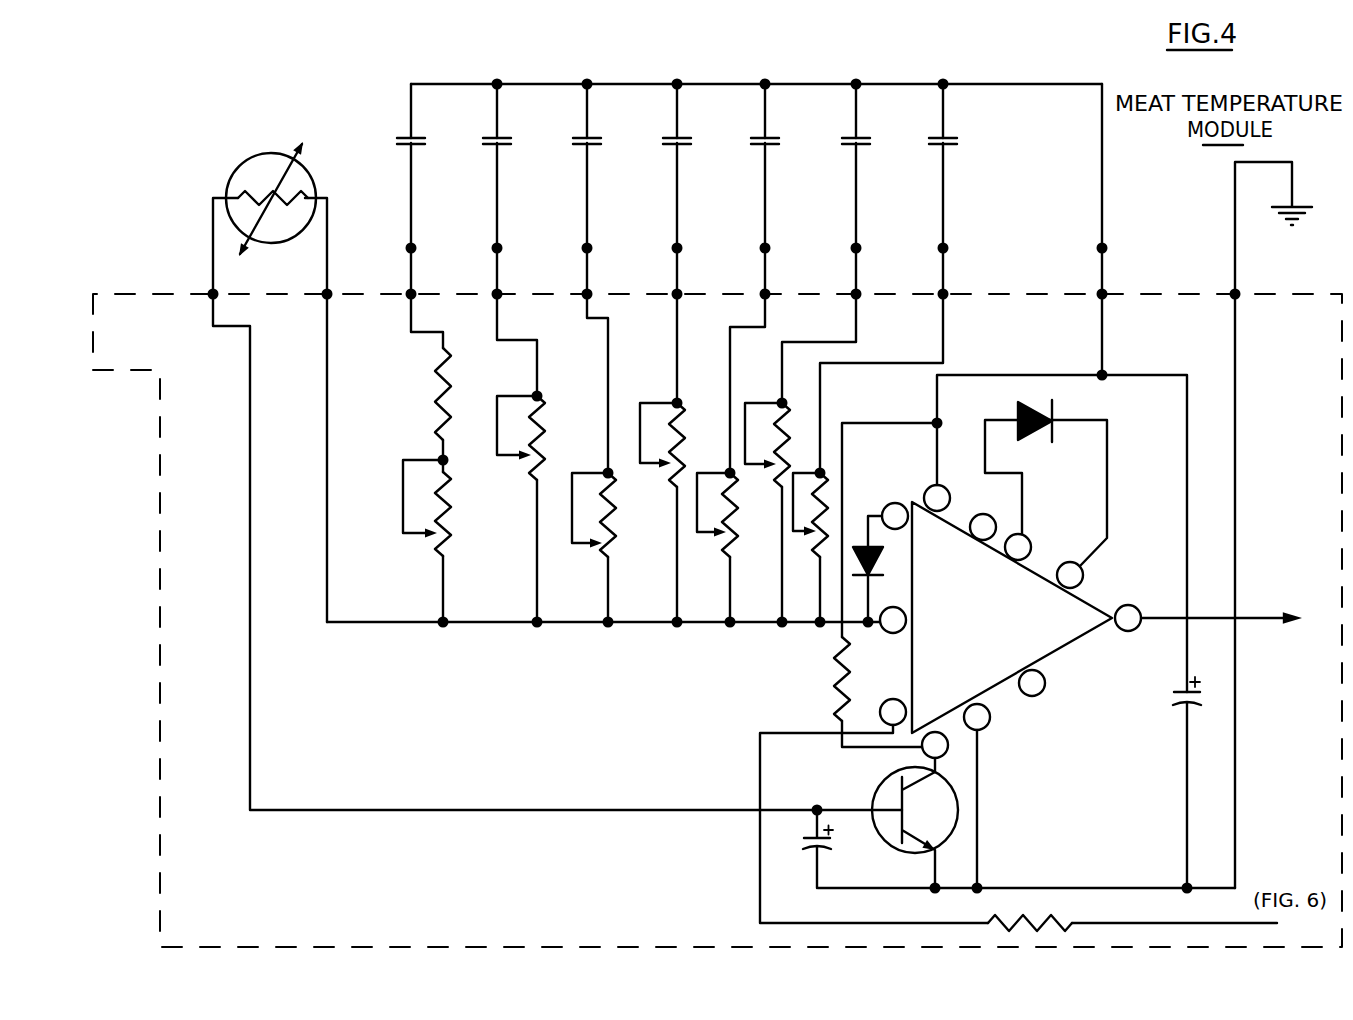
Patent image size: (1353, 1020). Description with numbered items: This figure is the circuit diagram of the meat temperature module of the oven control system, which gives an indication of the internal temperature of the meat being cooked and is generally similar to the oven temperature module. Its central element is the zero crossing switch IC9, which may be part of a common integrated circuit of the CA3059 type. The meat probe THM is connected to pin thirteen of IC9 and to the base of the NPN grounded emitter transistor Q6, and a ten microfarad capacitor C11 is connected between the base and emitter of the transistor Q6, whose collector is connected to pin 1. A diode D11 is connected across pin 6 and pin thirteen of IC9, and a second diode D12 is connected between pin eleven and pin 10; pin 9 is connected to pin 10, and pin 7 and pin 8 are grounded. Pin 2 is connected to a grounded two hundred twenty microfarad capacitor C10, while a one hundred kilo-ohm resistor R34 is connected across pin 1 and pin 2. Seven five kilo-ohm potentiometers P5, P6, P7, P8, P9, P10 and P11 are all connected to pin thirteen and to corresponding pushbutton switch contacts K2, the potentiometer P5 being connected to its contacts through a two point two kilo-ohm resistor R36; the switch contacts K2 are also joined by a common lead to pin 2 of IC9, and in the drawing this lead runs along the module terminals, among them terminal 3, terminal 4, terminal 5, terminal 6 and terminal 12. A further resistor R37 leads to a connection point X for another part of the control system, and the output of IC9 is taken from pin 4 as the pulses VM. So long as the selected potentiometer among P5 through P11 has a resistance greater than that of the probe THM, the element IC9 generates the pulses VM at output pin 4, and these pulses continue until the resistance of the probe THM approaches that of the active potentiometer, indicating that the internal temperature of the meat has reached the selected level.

The meat probe THM is at (281, 154).
The pushbutton switch contacts K2 is at (946, 136).
The resistor R36 is at (443, 358).
The potentiometer P5 is at (444, 498).
The potentiometer P6 is at (542, 435).
The potentiometer P7 is at (609, 522).
The potentiometer P8 is at (677, 436).
The potentiometer P9 is at (732, 524).
The potentiometer P10 is at (786, 454).
The potentiometer P11 is at (812, 543).
The zero crossing switch IC9 is at (1010, 621).
The resistor R34 is at (840, 660).
The diode D11 is at (884, 565).
The diode D12 is at (1054, 428).
The resistor R37 is at (1072, 914).
The NPN grounded emitter transistor Q6 is at (885, 847).
The capacitor C11 is at (840, 834).
The capacitor C10 is at (1166, 704).
The pulses VM is at (1246, 622).
The connection point X to FIG. 6 X is at (1292, 925).
The pin 1 is at (220, 285).
The pin 2 is at (334, 285).
The module terminal 3 is at (418, 285).
The output pin 4 is at (504, 285).
The module terminal 5 is at (594, 285).
The pin 6 is at (684, 285).
The pin 7 is at (772, 285).
The pin 8 is at (863, 285).
The pin 9 is at (950, 285).
The pin 10 is at (1114, 229).
The module terminal 12 is at (1271, 525).